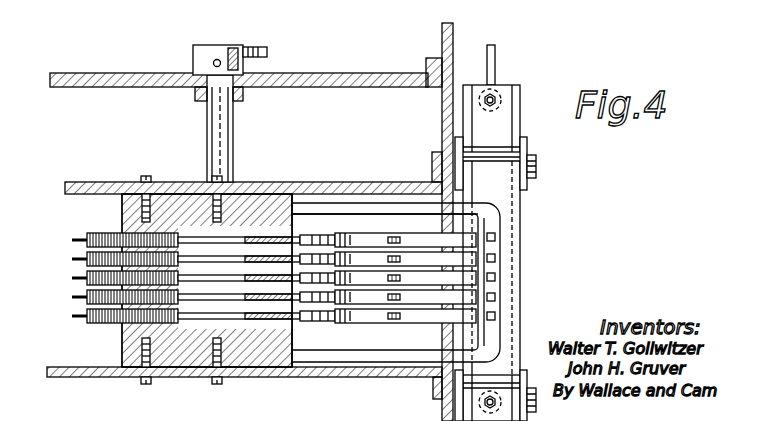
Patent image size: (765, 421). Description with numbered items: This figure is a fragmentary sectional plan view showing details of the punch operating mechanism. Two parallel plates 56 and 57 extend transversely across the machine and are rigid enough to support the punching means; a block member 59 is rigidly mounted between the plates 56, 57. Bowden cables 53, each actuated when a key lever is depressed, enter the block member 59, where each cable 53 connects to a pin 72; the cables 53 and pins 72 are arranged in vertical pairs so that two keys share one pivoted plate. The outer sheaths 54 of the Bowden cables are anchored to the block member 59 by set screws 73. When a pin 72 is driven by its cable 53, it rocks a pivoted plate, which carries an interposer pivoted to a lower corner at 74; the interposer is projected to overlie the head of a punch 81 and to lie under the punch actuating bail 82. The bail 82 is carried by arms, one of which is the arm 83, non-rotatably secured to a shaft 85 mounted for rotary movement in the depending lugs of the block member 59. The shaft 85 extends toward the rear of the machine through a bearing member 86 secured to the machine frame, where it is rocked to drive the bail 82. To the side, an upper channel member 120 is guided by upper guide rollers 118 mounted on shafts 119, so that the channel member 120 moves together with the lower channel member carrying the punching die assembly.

The Bowden cable 53 is at (85, 240).
The outer sheath 54 is at (100, 233).
The plate 56 is at (296, 182).
The plate 57 is at (310, 372).
The block member 59 is at (123, 350).
The pin 72 is at (180, 196).
The set screw 73 is at (413, 262).
The interposer pivot 74 is at (317, 328).
The punch 81 is at (503, 238).
The punch actuating bail 82 is at (497, 222).
The arm 83 is at (346, 207).
The shaft 85 is at (233, 132).
The bearing member 86 is at (262, 54).
The upper guide roller 118 is at (527, 185).
The shaft 119 is at (537, 166).
The channel member 120 is at (513, 88).